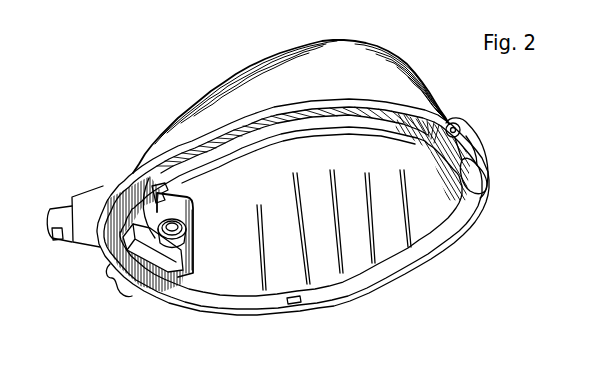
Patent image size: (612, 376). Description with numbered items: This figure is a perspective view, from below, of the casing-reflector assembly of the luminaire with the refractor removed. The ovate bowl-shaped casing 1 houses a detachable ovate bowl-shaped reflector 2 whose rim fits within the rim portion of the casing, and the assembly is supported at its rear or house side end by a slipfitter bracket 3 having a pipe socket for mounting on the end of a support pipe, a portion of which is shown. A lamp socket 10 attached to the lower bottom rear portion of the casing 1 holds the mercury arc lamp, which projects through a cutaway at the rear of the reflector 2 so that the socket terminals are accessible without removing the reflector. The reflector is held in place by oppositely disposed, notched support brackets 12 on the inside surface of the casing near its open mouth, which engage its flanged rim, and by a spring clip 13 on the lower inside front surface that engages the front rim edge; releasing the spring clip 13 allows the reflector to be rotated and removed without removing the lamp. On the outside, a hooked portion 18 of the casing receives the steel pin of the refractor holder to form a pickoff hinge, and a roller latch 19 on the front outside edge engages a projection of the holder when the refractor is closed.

The casing 1 is at (374, 53).
The reflector 2 is at (224, 226).
The bracket 3 is at (92, 191).
The lamp socket 10 is at (170, 268).
The support brackets 12 is at (155, 187).
The spring clip 13 is at (480, 195).
The hooked portion 18 is at (112, 288).
The roller latch 19 is at (483, 173).